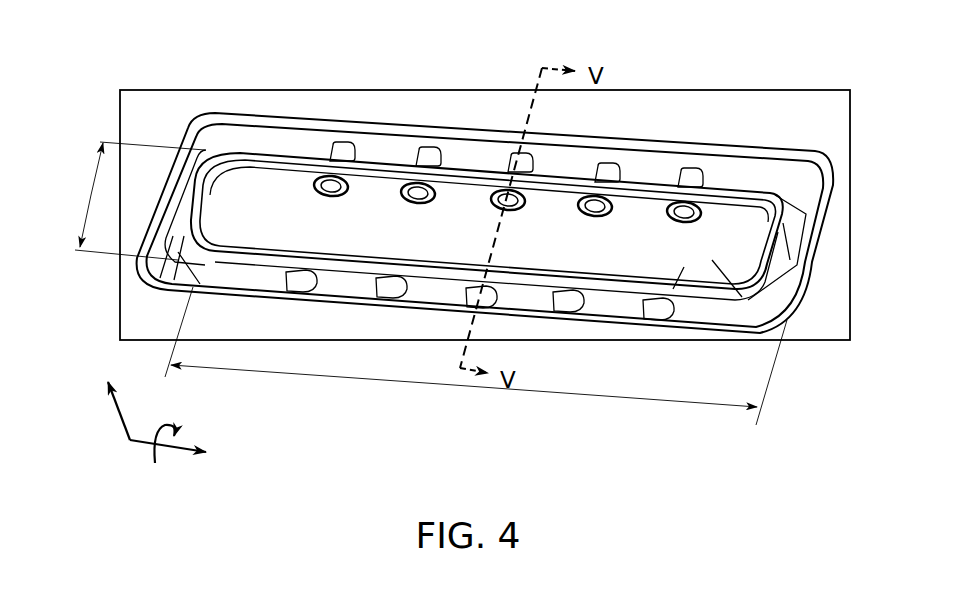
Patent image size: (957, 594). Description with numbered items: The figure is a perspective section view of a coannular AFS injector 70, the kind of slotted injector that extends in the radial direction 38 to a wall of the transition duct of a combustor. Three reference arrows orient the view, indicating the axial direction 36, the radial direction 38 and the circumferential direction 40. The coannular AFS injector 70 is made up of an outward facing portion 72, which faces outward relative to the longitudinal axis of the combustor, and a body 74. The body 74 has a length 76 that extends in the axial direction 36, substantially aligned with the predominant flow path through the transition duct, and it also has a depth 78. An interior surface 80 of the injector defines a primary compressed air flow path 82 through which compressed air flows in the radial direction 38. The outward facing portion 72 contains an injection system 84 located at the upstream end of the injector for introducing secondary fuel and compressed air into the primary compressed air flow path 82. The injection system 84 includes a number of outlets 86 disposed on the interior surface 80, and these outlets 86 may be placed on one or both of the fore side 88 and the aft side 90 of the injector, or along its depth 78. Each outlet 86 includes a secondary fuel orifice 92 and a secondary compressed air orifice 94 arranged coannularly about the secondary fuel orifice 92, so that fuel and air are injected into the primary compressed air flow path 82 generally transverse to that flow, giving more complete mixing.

The axial direction 36 is at (198, 447).
The radial direction 38 is at (128, 412).
The circumferential direction 40 is at (156, 455).
The coannular AFS injector 70 is at (238, 55).
The outward facing portion 72 is at (803, 100).
The body 74 is at (800, 290).
The length 76 is at (433, 384).
The depth 78 is at (90, 188).
The interior surface 80 is at (728, 228).
The primary compressed air flow path 82 is at (560, 246).
The injection system 84 is at (480, 108).
The outlets 86 is at (340, 145).
The fore side 88 is at (636, 212).
The aft side 90 is at (673, 267).
The secondary fuel orifice 92 is at (338, 190).
The secondary compressed air orifice 94 is at (320, 190).